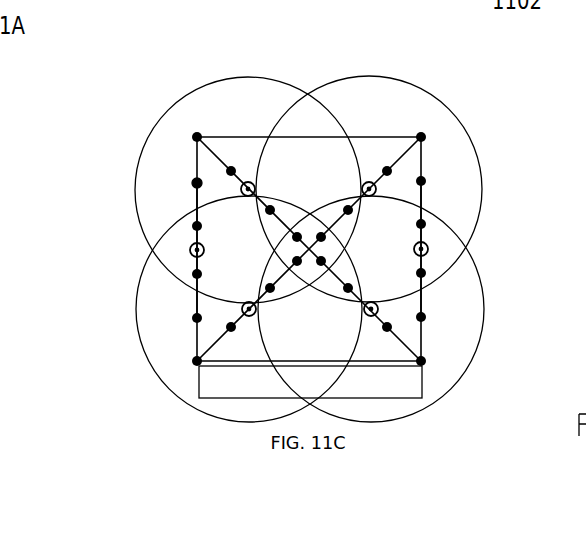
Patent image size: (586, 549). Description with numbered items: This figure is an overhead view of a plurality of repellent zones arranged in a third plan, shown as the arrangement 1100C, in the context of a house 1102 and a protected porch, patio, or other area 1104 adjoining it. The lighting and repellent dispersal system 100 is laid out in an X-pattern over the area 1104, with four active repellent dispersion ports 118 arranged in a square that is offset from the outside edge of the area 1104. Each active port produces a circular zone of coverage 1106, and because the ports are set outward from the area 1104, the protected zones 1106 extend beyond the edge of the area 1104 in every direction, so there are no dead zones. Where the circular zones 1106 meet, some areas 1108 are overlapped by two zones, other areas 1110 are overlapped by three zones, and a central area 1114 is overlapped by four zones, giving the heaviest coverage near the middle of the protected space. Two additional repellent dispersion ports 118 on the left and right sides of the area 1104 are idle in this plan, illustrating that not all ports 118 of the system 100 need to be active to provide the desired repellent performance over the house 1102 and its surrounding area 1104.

The lighting and repellant dispersal system 100 is at (402, 338).
The repellent dispersion port 118 is at (243, 138).
The system 1100C is at (443, 92).
The house 1102 is at (194, 386).
The area 1104 is at (251, 138).
The zone of coverage 1106 is at (162, 116).
The area overlapped by two zones 1108 is at (313, 124).
The area overlapped by three zones 1110 is at (290, 215).
The area overlapped by four zones 1114 is at (192, 182).